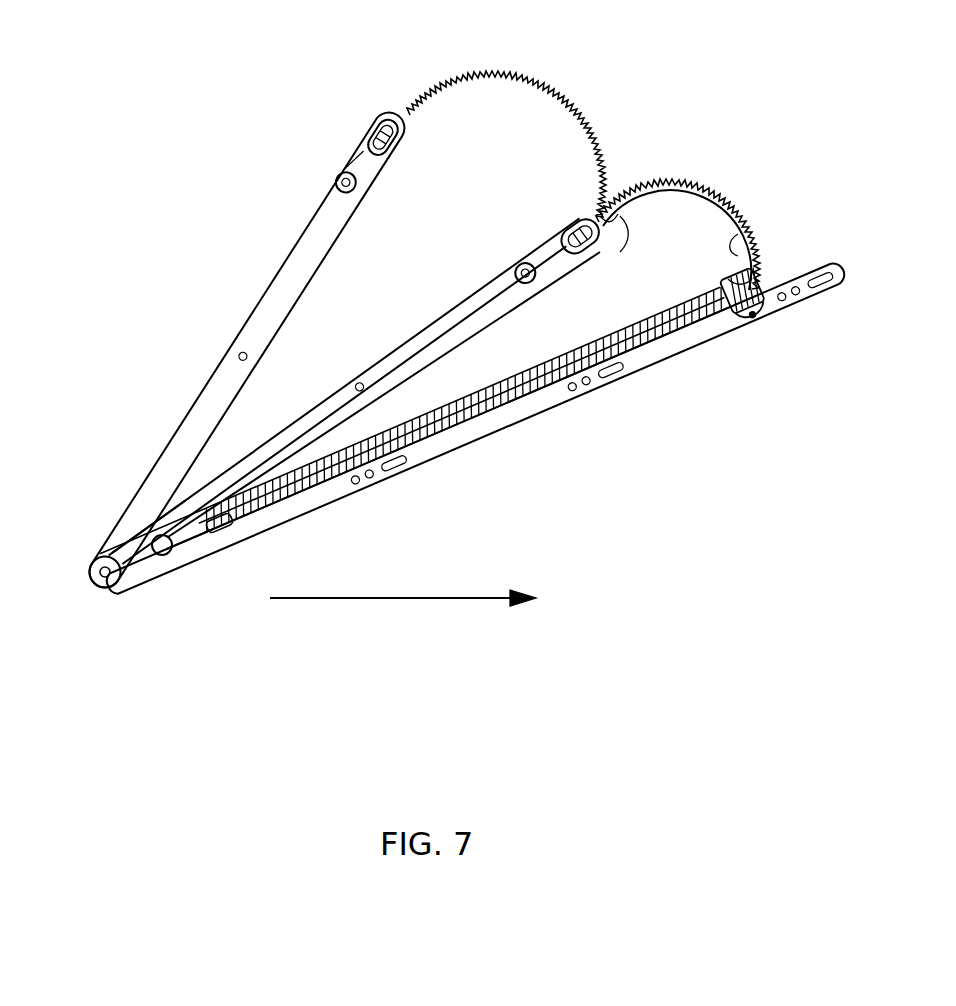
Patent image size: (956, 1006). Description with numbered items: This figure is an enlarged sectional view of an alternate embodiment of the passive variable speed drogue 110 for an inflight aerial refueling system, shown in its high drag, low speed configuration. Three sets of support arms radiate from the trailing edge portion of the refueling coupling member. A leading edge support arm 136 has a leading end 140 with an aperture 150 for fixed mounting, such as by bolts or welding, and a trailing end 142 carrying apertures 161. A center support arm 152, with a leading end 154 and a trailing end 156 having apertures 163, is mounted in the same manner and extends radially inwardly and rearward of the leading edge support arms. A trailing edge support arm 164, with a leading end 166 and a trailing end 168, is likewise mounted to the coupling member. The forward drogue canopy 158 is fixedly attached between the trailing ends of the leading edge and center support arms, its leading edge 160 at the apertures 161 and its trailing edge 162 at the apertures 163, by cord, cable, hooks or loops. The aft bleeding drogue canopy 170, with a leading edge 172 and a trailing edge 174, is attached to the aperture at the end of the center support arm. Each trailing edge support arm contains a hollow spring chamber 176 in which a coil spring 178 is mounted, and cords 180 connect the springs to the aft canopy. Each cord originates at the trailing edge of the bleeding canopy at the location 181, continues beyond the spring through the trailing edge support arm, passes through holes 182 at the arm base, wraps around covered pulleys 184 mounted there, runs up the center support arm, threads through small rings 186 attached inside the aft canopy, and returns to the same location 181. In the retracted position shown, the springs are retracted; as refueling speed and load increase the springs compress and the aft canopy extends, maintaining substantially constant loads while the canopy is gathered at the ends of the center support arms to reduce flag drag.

The passive variable speed drogue 110 is at (178, 322).
The leading edge support arm 136 is at (283, 272).
The leading end 140 is at (108, 548).
The trailing end 142 is at (340, 172).
The aperture 150 is at (105, 587).
The leading end 154 is at (165, 500).
The trailing end 156 is at (522, 258).
The forward drogue canopy 158 is at (583, 86).
The leading edge 160 is at (403, 112).
The apertures 161 is at (373, 118).
The trailing edge 162 is at (615, 193).
The apertures 163 is at (582, 232).
The trailing edge support arm 164 is at (497, 428).
The leading end 166 is at (170, 557).
The trailing end 168 is at (760, 318).
The aft bleeding drogue canopy 170 is at (742, 205).
The leading edge 172 is at (622, 216).
The trailing edge 174 is at (770, 268).
The hollow spring chamber 176 is at (423, 458).
The coil spring 178 is at (655, 345).
The cords 180 is at (740, 245).
The attachment location 181 is at (735, 280).
The holes 182 is at (212, 528).
The covered pulleys 184 is at (190, 558).
The small rings 186 is at (690, 184).
The center support arm 152 is at (420, 326).